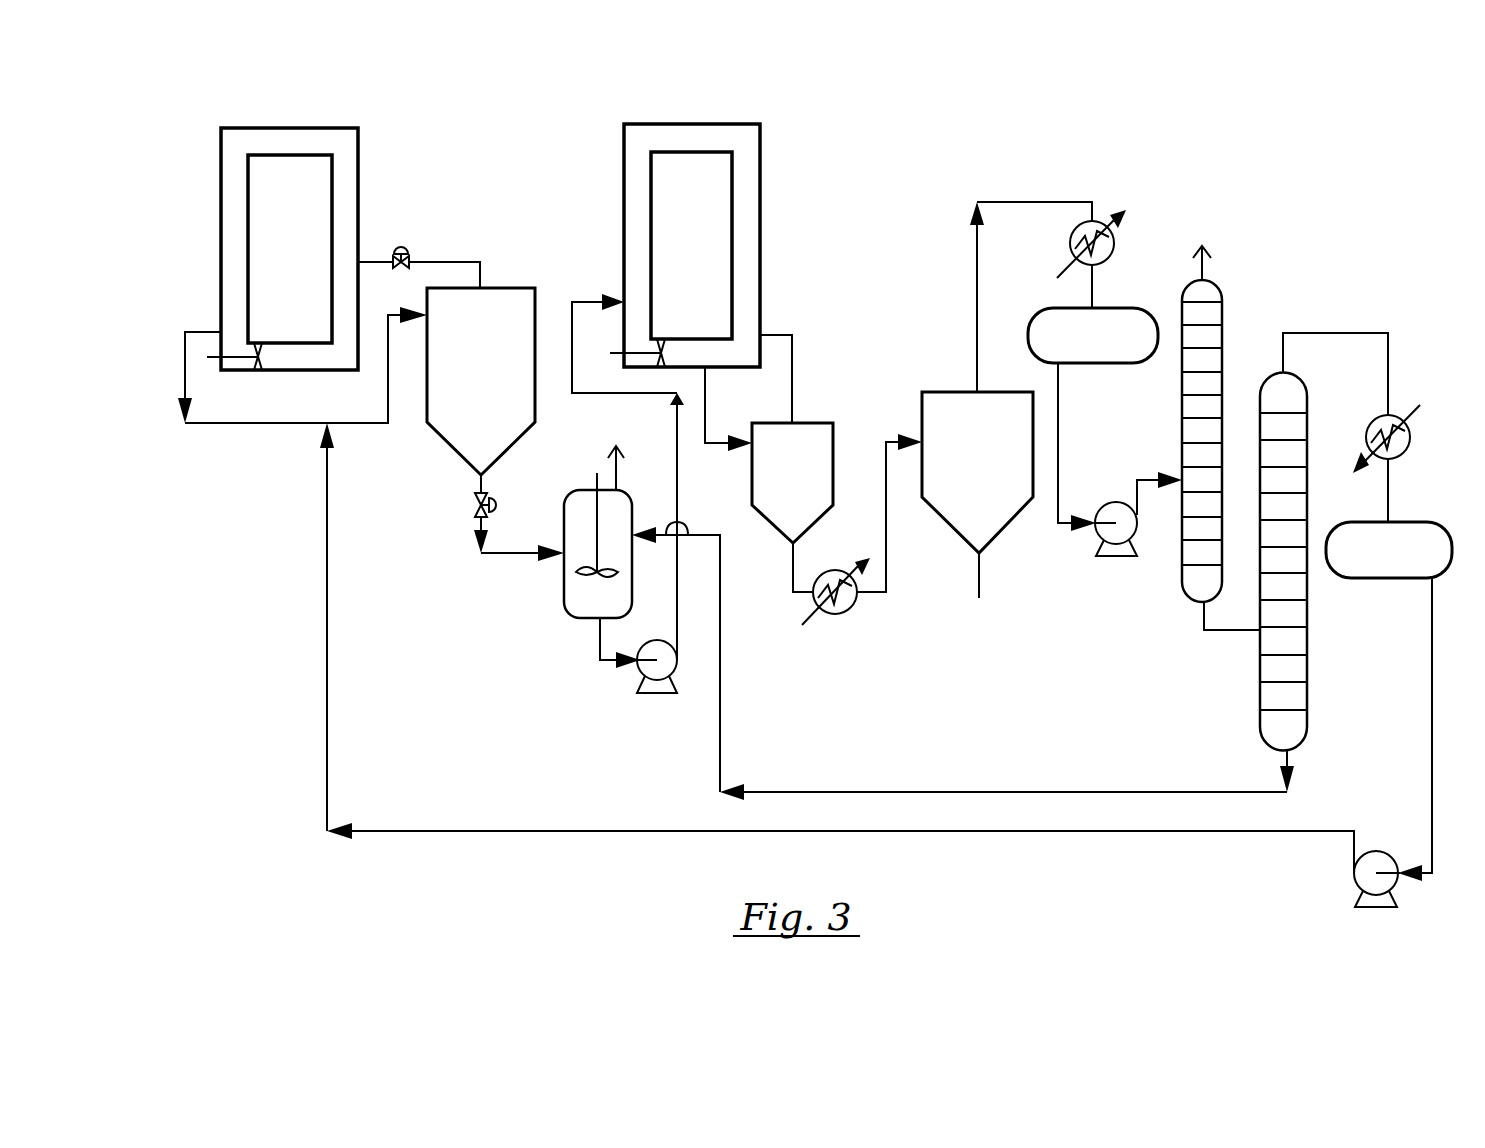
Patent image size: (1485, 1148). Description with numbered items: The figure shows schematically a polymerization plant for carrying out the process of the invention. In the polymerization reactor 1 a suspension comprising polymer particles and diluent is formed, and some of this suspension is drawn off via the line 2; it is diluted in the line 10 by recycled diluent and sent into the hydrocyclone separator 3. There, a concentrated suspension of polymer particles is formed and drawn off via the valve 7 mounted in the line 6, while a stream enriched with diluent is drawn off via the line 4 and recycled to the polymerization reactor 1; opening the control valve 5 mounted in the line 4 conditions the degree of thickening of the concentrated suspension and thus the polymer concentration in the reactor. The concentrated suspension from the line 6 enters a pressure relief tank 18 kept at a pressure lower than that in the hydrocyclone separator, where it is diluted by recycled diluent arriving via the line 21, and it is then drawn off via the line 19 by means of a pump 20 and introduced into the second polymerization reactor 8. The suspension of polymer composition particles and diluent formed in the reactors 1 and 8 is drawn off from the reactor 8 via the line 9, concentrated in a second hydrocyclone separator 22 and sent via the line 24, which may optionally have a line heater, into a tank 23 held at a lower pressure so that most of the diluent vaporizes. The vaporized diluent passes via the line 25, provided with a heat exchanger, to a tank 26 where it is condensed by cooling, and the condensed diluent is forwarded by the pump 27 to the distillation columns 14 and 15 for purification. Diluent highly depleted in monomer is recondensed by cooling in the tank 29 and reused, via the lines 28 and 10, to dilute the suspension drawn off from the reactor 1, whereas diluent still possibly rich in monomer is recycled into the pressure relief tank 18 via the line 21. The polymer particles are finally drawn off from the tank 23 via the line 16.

The polymerization reactor 1 is at (222, 165).
The line 2 is at (207, 425).
The hydrocyclone separator 3 is at (461, 427).
The line 4 is at (484, 276).
The control valve 5 is at (394, 245).
The line 6 is at (512, 553).
The valve 7 is at (476, 502).
The polymerization reactor 8 is at (750, 160).
The line 9 is at (708, 407).
The line 10 is at (327, 678).
The distillation column 14 is at (1202, 314).
The distillation column 15 is at (1285, 670).
The line 16 is at (980, 585).
The pressure relief tank 18 is at (582, 502).
The line 19 is at (677, 497).
The pump 20 is at (650, 690).
The line 21 is at (1030, 792).
The hydrocyclone separator 22 is at (798, 452).
The tank 23 is at (948, 400).
The line 24 is at (886, 572).
The line 25 is at (1020, 202).
The tank 26 is at (1120, 332).
The pump 27 is at (1112, 555).
The line 28 is at (1430, 685).
The tank 29 is at (1416, 548).